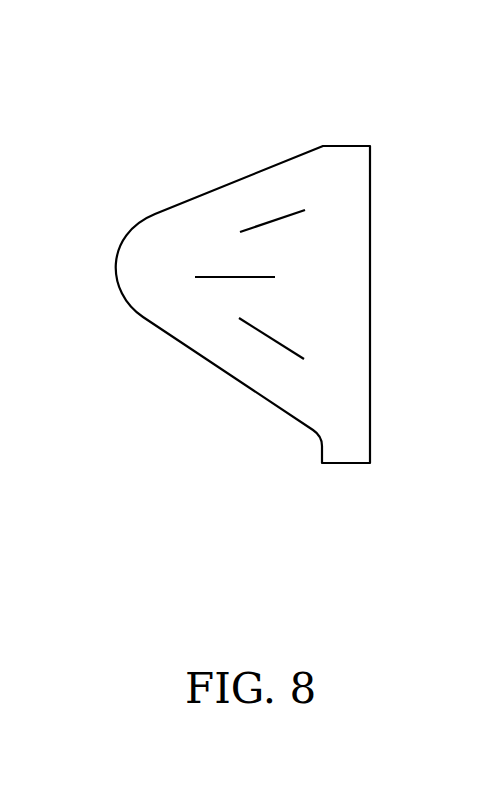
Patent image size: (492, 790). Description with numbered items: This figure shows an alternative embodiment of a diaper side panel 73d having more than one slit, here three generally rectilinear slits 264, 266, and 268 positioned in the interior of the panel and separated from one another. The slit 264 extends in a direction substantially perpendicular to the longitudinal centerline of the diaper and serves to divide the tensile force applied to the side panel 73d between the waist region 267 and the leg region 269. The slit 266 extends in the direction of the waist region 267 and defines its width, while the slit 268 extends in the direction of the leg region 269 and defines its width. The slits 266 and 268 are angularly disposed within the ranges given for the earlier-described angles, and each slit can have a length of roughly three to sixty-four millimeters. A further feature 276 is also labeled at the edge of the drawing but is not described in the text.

The side panel 73d is at (186, 465).
The slit 264 is at (215, 279).
The slit 266 is at (272, 223).
The waist region 267 is at (180, 228).
The slit 268 is at (273, 339).
The leg region 269 is at (210, 325).
The side wall 276 is at (475, 332).